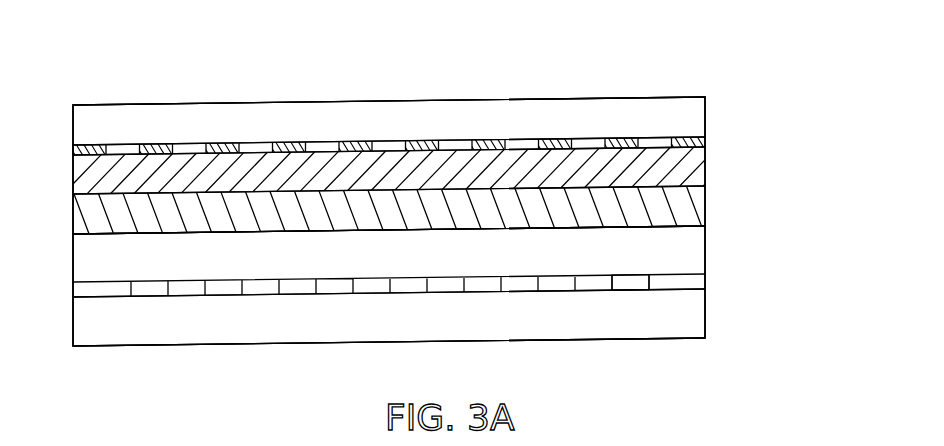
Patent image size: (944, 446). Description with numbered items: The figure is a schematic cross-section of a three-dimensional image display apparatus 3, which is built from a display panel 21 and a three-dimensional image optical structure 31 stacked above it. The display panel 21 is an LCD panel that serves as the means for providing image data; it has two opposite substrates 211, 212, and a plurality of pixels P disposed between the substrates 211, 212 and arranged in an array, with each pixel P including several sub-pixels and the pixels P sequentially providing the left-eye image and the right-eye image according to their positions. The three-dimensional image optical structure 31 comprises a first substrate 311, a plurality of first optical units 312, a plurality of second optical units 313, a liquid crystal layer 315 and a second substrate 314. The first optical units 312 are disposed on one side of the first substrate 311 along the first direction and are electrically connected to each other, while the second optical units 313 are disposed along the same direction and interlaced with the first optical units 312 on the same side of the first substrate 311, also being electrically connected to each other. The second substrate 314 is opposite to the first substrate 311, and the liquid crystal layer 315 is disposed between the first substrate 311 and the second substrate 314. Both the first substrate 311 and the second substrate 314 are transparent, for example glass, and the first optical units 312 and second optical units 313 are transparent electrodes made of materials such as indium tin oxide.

The 3D image display apparatus 3 is at (96, 82).
The 3D image optical structure 31 is at (807, 83).
The first substrate 311 is at (680, 103).
The first optical units 312 is at (663, 137).
The second optical units 313 is at (703, 142).
The liquid crystal layer 315 is at (700, 171).
The second substrate 314 is at (700, 206).
The display panel 21 is at (807, 253).
The substrate 212 is at (695, 257).
The substrate 211 is at (695, 310).
The pixel P is at (632, 285).